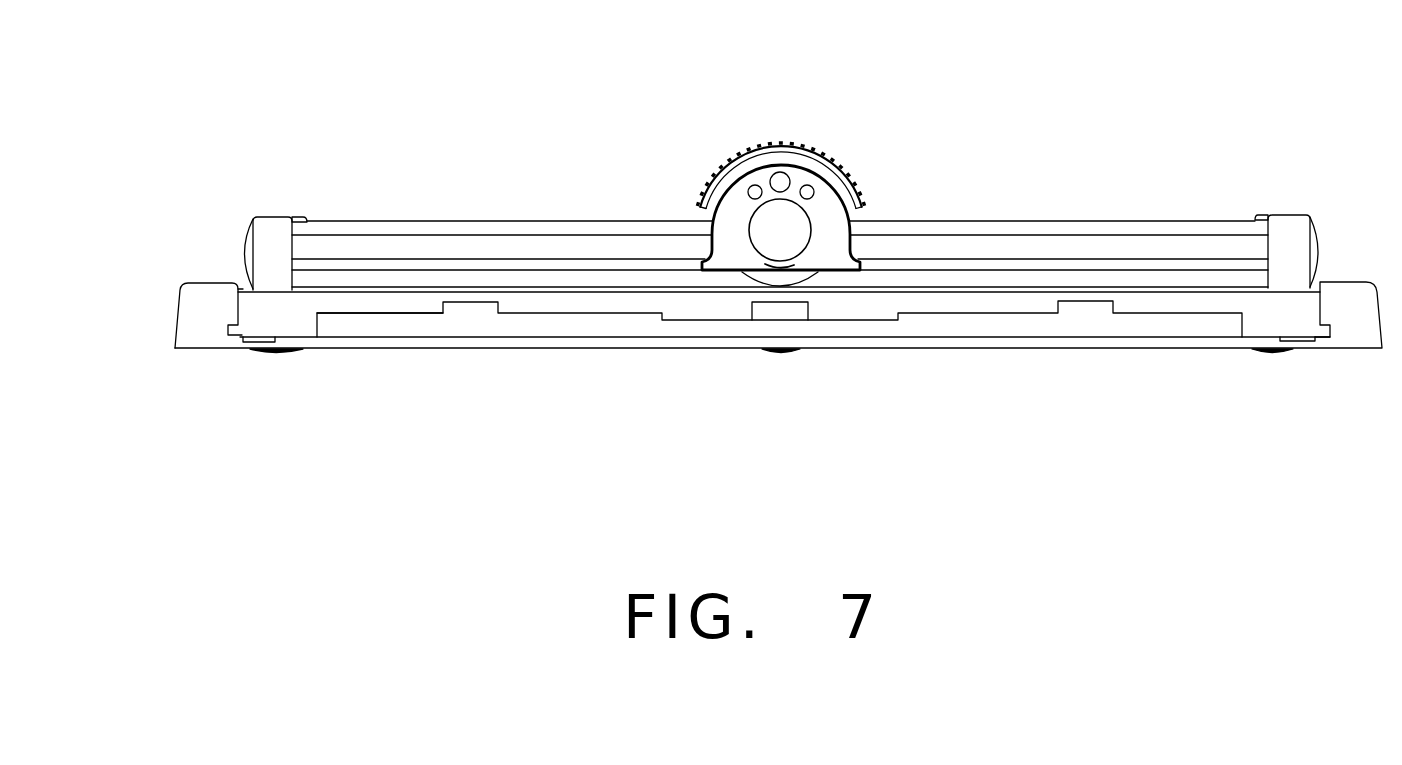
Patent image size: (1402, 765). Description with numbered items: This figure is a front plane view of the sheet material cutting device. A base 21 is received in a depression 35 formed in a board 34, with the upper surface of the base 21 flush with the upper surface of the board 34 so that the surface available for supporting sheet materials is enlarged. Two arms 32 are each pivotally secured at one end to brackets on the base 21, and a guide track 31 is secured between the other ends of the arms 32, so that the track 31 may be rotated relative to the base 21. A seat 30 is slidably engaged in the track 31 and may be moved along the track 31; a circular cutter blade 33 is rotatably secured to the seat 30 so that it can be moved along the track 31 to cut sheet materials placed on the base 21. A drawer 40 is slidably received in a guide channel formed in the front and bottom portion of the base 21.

The base 21 is at (363, 312).
The seat 30 is at (813, 157).
The guide track 31 is at (1088, 230).
The arms 32 is at (278, 226).
The circular cutter blade 33 is at (805, 273).
The board 34 is at (193, 317).
The depression 35 is at (243, 291).
The drawer 40 is at (580, 327).